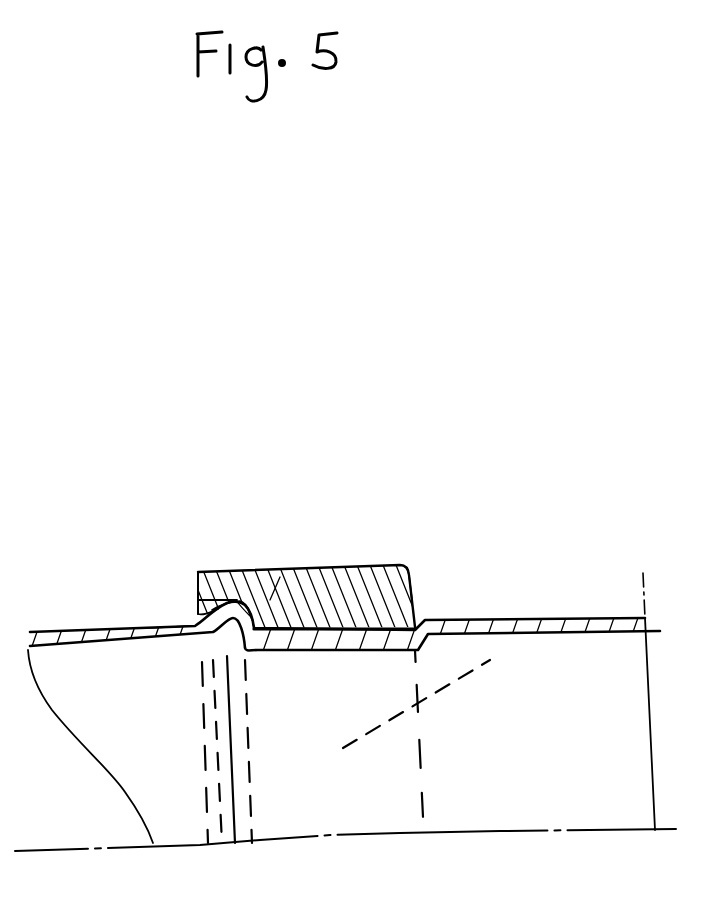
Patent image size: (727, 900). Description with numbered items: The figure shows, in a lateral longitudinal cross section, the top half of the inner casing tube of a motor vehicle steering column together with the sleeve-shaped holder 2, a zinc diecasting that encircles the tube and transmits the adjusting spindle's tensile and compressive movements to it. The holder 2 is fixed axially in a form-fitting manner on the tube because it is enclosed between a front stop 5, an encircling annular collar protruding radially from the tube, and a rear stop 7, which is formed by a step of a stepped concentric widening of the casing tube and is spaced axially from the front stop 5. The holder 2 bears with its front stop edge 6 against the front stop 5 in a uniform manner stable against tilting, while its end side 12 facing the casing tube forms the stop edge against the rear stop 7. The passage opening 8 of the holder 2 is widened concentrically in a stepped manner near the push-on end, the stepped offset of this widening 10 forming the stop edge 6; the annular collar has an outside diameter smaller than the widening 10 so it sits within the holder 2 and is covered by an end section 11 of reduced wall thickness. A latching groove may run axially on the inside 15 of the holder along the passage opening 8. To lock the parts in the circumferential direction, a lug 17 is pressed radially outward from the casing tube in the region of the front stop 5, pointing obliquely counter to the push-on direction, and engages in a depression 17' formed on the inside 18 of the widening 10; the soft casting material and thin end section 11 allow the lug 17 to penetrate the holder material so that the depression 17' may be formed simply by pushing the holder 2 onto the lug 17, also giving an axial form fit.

The holder 2 is at (303, 580).
The front stop 5 is at (185, 626).
The front stop edge 6 is at (235, 600).
The rear stop 7 is at (420, 625).
The passage opening 8 is at (557, 613).
The widening 10 is at (208, 612).
The end section 11 is at (223, 597).
The end side 12 is at (413, 582).
The inside of the holder 15 is at (353, 633).
The lug 17 is at (267, 569).
The depression 17' is at (302, 540).
The inside of the widening 18 is at (200, 607).